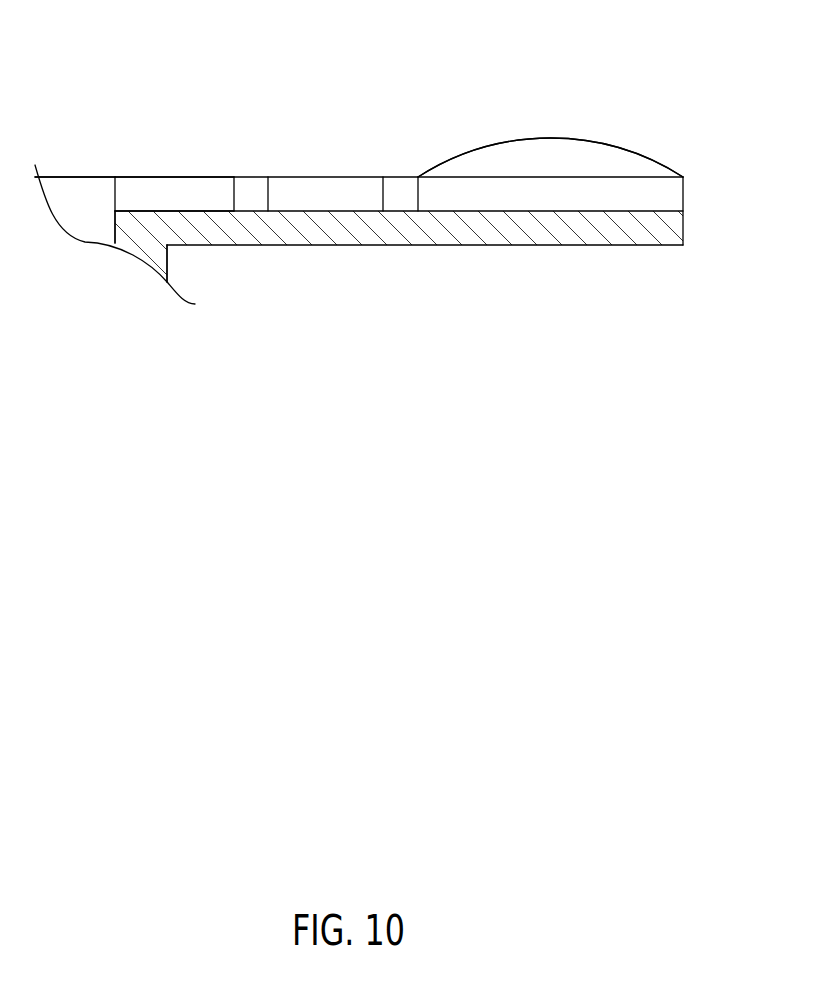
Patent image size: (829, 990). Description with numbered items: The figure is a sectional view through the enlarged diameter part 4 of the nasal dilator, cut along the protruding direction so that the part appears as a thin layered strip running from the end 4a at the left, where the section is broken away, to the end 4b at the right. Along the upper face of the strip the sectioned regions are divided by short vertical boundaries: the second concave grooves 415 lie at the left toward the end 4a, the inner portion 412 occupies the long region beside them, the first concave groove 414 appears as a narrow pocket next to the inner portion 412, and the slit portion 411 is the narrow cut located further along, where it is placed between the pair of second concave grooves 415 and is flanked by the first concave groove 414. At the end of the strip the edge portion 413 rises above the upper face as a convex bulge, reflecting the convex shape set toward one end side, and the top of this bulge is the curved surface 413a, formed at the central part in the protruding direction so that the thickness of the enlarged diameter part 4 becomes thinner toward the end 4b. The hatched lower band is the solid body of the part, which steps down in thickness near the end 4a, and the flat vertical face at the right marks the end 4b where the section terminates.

The enlarged diameter part 4 is at (557, 112).
The end 4a is at (115, 228).
The end 4b is at (685, 235).
The slit portion 411 is at (396, 172).
The inner portion 412 is at (197, 193).
The edge portion 413 is at (528, 163).
The curved surface 413a is at (607, 145).
The first concave groove 414 is at (267, 188).
The second concave grooves 415 is at (150, 210).